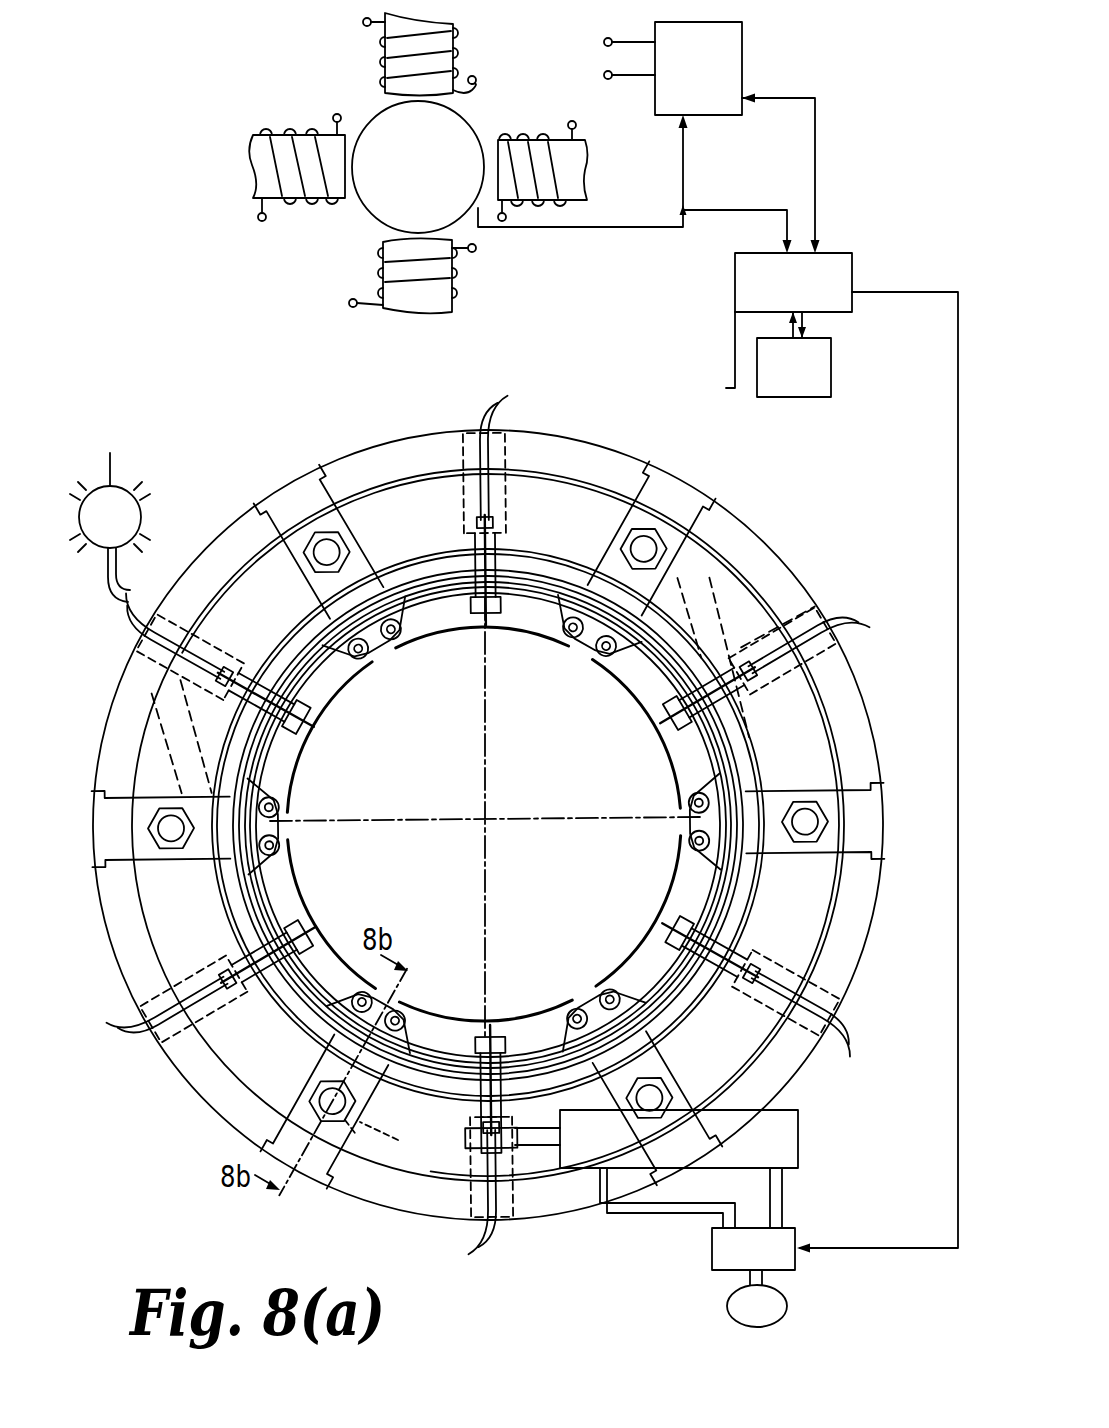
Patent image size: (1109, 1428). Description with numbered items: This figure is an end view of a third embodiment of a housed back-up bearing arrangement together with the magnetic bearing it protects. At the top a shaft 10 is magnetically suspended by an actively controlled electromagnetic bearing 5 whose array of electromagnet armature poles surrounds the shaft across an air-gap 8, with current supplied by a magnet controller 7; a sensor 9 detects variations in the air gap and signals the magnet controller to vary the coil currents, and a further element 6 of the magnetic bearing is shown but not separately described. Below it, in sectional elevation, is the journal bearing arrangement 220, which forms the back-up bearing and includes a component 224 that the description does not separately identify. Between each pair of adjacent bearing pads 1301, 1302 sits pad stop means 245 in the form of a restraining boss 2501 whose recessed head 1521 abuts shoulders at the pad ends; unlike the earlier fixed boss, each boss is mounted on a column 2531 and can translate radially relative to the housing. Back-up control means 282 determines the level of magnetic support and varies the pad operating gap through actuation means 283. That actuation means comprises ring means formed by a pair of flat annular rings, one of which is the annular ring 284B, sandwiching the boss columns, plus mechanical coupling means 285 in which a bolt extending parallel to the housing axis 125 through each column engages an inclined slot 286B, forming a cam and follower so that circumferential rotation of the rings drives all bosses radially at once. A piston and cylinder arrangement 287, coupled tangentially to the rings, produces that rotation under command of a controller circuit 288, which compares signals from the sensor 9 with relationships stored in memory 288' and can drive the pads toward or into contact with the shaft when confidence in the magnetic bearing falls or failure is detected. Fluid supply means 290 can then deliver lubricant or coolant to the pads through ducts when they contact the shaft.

The electromagnetic bearing 5 is at (303, 73).
The motor coil 6 is at (498, 140).
The magnet controller 7 is at (732, 63).
The air-gap 8 is at (395, 235).
The sensor 9 is at (478, 208).
The shaft 10 is at (433, 172).
The journal bearing arrangement 220 is at (235, 412).
The chuck body 224 is at (188, 1087).
The pad stop means 245 is at (409, 1090).
The housing axis 125 is at (490, 827).
The bearing pad 1301 is at (317, 952).
The bearing pad 1302 is at (531, 1022).
The restraining boss 2501 is at (397, 990).
The head 1521 is at (400, 996).
The column 2531 is at (320, 1038).
The mechanical coupling means 285 is at (310, 1090).
The annular ring 284B is at (232, 1032).
The slot 286B is at (398, 1140).
The fluid supply means 290 is at (110, 511).
The back-up control means 282 is at (674, 373).
The controller circuit 288 is at (672, 744).
The memory 288' is at (829, 354).
The actuation means 283 is at (842, 411).
The piston and cylinder arrangement 287 is at (790, 1127).